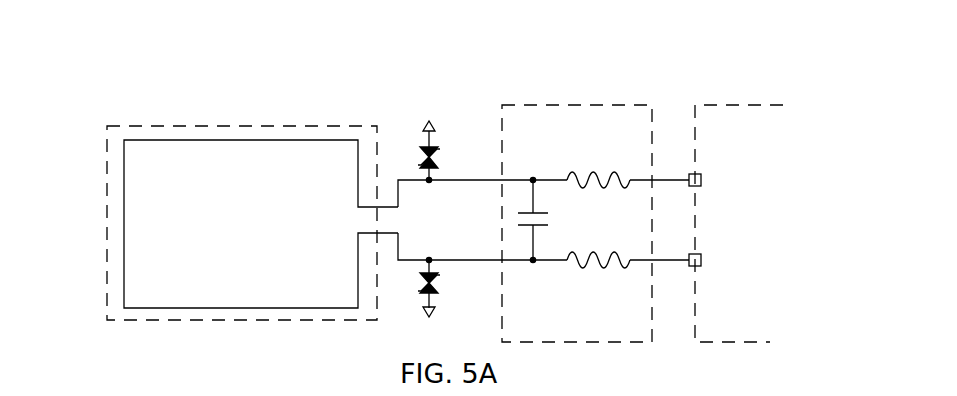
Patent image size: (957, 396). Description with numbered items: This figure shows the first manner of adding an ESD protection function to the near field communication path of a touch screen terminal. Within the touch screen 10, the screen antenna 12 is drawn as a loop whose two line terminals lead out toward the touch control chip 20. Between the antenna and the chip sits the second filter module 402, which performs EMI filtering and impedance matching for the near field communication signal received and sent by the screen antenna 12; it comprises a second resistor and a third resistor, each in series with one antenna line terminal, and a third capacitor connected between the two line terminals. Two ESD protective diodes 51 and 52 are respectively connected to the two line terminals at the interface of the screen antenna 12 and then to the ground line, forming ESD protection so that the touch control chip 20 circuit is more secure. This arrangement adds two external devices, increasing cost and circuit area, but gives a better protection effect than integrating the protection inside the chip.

The touch screen 10 is at (292, 126).
The screen antenna 12 is at (145, 140).
The touch control chip 20 is at (718, 105).
The ESD protective diode 51 is at (485, 133).
The ESD protective diode 52 is at (442, 287).
The second filter module 402 is at (550, 105).